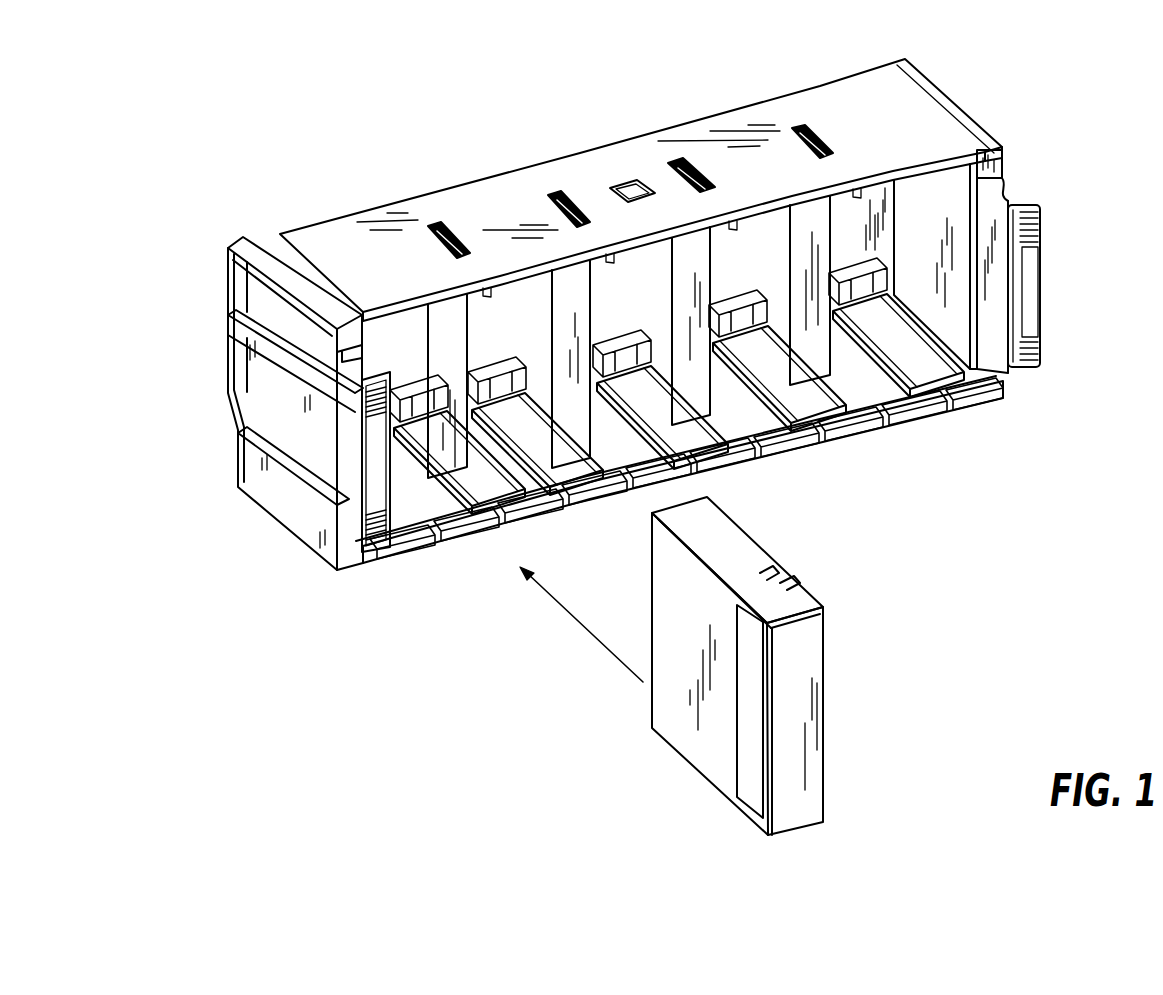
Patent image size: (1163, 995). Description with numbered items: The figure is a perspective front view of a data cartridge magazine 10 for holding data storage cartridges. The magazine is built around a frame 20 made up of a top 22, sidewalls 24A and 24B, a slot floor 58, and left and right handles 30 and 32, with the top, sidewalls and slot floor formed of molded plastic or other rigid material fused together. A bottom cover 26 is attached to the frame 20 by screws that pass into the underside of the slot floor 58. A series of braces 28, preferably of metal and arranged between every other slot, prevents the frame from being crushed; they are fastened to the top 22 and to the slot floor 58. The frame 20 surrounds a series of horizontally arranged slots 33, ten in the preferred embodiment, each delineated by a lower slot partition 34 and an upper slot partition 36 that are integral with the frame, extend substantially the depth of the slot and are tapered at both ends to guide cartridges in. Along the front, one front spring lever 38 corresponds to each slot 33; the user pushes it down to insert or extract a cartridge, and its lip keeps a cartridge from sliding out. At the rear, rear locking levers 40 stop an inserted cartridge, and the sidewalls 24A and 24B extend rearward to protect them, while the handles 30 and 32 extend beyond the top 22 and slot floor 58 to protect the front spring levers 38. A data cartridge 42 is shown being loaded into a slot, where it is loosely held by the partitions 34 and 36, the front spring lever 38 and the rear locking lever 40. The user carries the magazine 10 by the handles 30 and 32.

The data cartridge magazine 10 is at (468, 82).
The frame 20 is at (268, 211).
The top 22 is at (832, 97).
The sidewall 24A is at (318, 352).
The sidewall 24B is at (943, 185).
The bottom cover 26 is at (222, 513).
The brace 28 is at (441, 328).
The left handle 30 is at (372, 470).
The right handle 32 is at (1040, 270).
The slot 33 is at (622, 449).
The lower slot partition 34 is at (900, 423).
The upper slot partition 36 is at (883, 285).
The front spring lever 38 is at (468, 545).
The rear locking lever 40 is at (597, 327).
The data cartridge 42 is at (842, 685).
The slot floor 58 is at (513, 537).